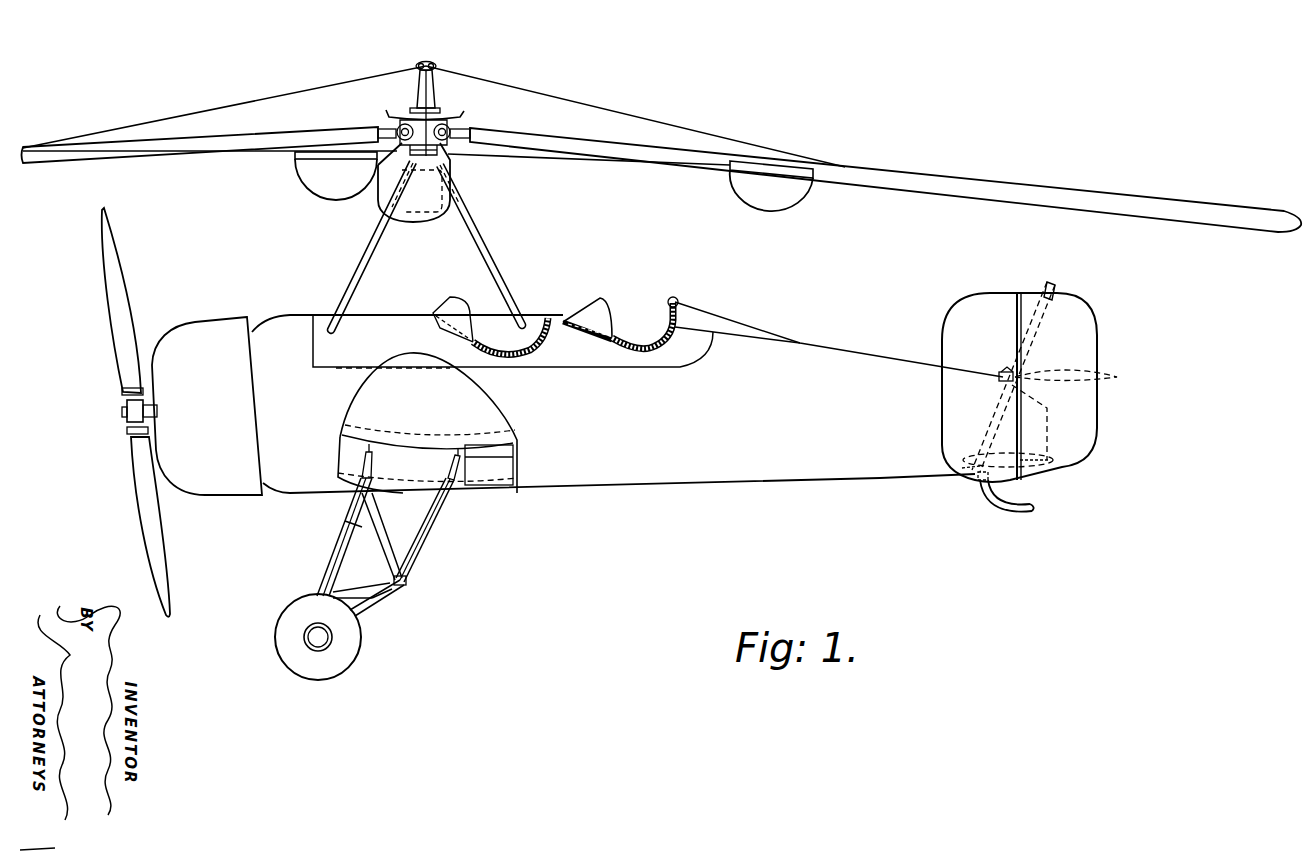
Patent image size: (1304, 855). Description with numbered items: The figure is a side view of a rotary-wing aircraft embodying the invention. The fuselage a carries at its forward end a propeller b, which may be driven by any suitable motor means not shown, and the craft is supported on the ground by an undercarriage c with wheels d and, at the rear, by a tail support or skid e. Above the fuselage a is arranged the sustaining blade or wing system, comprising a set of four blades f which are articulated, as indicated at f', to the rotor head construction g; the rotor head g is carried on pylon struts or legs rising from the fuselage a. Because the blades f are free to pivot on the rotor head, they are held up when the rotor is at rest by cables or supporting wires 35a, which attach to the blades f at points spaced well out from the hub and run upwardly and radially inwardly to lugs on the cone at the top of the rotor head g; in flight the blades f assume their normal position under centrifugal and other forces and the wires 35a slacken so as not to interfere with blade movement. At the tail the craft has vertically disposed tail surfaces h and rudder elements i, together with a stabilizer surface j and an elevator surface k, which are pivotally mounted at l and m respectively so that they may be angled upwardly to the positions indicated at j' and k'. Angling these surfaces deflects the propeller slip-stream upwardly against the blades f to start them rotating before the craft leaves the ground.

The supporting wires 35a is at (308, 88).
The rotor head construction g is at (350, 254).
The blades f is at (662, 190).
The blade articulation f' is at (448, 108).
The fuselage a is at (577, 396).
The propeller b is at (136, 412).
The undercarriage c is at (388, 530).
The wheels d is at (362, 643).
The tail support or skid e is at (1010, 512).
The vertically disposed tail surfaces h is at (948, 322).
The rudder elements i is at (1085, 333).
The stabilizer surface j is at (1023, 488).
The upwardly angled stabilizer position j' is at (980, 426).
The elevator surface k is at (1079, 359).
The upwardly angled elevator position k' is at (1036, 371).
The stabilizer pivot l is at (962, 470).
The elevator pivot m is at (999, 378).